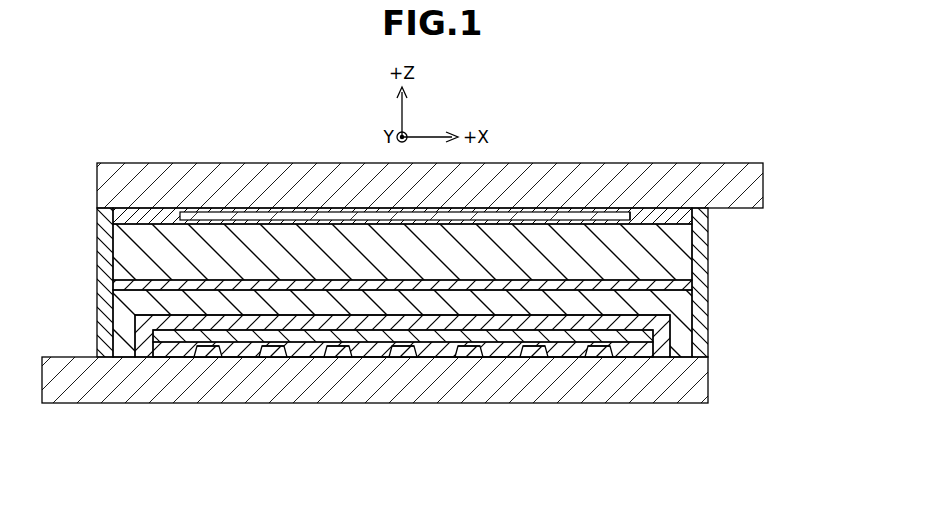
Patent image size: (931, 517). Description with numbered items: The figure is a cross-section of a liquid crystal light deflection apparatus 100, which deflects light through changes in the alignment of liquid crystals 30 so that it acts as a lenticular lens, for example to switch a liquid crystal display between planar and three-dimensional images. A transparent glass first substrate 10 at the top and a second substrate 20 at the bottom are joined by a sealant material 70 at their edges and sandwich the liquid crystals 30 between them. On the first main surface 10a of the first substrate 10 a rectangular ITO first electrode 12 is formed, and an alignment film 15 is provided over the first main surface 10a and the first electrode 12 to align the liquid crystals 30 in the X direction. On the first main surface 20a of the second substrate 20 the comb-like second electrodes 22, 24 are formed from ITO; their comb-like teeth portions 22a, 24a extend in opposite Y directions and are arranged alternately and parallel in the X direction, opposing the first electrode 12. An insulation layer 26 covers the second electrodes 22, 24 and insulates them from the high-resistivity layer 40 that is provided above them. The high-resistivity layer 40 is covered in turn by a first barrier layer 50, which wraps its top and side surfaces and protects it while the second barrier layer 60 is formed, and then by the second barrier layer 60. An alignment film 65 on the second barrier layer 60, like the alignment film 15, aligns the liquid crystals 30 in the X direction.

The liquid crystal light deflection apparatus 100 is at (180, 147).
The first substrate 10 is at (766, 182).
The first main surface 10a is at (645, 212).
The first electrode 12 is at (128, 216).
The alignment film 15 is at (698, 218).
The second substrate 20 is at (712, 378).
The first main surface 20a is at (640, 350).
The second electrode 22 is at (229, 357).
The comb-like teeth portion 22a is at (436, 418).
The second electrode 24 is at (292, 357).
The comb-like teeth portion 24a is at (436, 418).
The insulation layer 26 is at (174, 352).
The liquid crystals 30 is at (688, 254).
The high-resistivity layer 40 is at (655, 338).
The first barrier layer 50 is at (146, 323).
The second barrier layer 60 is at (690, 303).
The alignment film 65 is at (120, 286).
The sealant material 70 is at (106, 250).